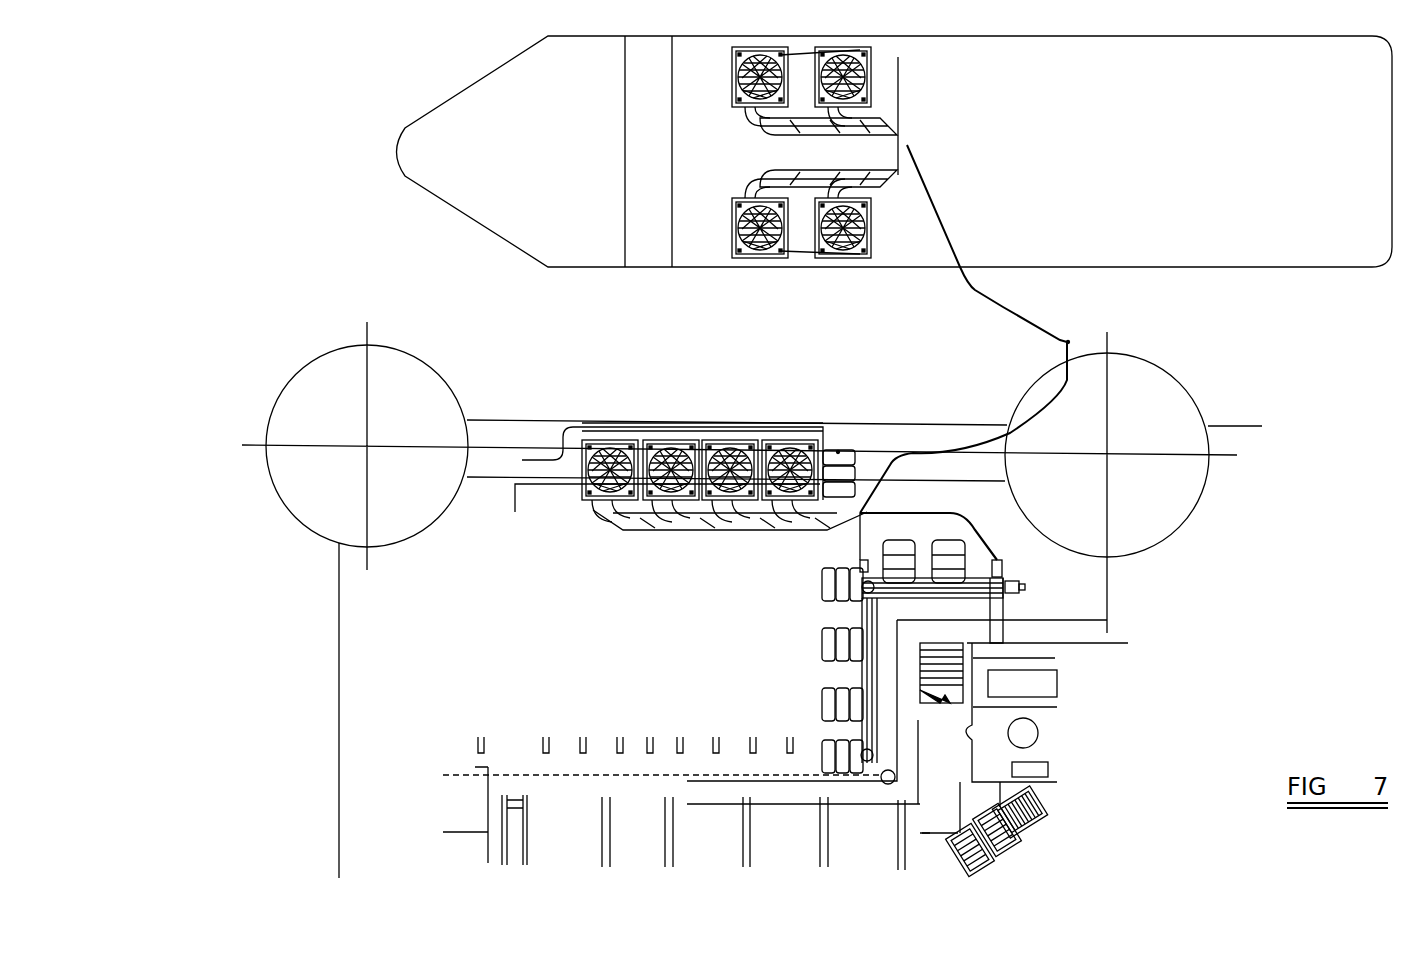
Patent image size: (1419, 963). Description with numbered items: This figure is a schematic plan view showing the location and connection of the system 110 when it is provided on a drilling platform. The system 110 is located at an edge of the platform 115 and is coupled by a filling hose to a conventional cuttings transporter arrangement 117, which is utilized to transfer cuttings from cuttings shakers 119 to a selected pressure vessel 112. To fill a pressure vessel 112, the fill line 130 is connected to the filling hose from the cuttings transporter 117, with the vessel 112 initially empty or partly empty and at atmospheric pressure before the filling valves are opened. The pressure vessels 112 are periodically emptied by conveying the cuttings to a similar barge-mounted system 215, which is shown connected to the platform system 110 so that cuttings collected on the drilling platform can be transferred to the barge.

The system 110 is at (687, 415).
The pressure vessel 112 is at (788, 427).
The platform 115 is at (337, 583).
The cuttings transporter arrangement 117 is at (1005, 593).
The cuttings shakers 119 is at (957, 583).
The fill line 130 is at (980, 530).
The barge-mounted system 215 is at (780, 277).